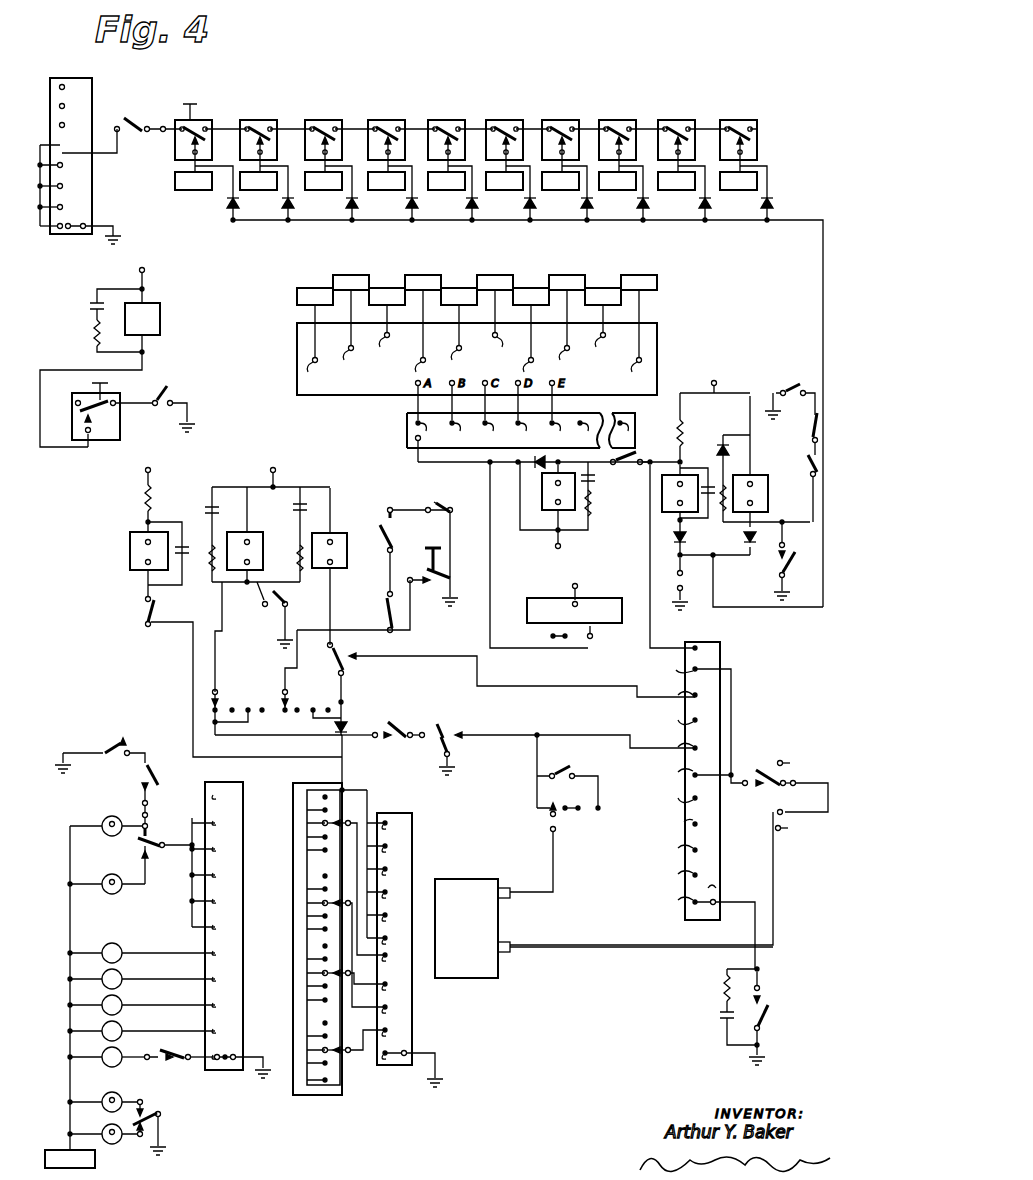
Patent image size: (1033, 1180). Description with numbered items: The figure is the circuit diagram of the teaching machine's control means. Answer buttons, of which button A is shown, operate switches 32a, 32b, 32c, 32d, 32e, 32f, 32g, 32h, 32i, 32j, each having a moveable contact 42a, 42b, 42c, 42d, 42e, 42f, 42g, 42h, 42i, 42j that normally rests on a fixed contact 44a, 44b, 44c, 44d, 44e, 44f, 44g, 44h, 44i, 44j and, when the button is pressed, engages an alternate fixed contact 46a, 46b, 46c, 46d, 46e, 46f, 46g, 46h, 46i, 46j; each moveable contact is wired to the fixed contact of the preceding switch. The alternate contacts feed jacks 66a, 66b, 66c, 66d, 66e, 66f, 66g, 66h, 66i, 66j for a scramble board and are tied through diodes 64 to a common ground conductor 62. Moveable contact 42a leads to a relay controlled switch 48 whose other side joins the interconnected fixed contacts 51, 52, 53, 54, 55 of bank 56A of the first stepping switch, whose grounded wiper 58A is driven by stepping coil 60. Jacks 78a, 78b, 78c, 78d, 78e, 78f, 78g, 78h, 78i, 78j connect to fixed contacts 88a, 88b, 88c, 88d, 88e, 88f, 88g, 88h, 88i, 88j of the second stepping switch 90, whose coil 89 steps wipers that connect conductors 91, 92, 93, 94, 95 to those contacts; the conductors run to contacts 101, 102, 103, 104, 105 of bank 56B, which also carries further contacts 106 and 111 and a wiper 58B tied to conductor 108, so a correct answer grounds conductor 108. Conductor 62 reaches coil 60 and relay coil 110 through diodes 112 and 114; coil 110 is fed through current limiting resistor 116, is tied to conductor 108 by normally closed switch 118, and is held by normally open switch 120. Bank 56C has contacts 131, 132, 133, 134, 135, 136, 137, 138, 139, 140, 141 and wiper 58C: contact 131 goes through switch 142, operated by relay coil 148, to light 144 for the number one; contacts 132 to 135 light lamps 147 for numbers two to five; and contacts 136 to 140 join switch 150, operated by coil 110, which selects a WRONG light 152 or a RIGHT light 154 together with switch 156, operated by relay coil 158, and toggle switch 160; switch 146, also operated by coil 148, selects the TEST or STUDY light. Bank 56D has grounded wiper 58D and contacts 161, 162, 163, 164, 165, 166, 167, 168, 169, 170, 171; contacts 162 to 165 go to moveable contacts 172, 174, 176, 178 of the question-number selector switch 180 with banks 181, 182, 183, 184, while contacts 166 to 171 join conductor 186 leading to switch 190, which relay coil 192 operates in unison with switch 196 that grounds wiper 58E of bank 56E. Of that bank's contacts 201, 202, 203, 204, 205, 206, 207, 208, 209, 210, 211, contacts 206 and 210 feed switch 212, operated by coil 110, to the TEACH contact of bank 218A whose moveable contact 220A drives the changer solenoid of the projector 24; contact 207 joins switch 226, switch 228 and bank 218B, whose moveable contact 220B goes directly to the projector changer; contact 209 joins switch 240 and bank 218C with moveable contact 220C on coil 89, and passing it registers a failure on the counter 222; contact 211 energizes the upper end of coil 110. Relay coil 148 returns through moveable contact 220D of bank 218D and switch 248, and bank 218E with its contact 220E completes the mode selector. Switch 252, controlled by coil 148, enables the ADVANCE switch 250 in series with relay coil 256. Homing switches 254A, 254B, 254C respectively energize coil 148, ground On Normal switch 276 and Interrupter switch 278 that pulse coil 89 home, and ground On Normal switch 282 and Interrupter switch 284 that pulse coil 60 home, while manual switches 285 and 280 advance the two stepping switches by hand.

The relay controlled switch 48 is at (130, 116).
The bank of rotary stepping switch 56A is at (80, 78).
The fixed contact 55 is at (78, 141).
The fixed contact 54 is at (52, 185).
The fixed contact 53 is at (52, 179).
The fixed contact 52 is at (52, 200).
The fixed contact 51 is at (53, 219).
The wiper 58A is at (86, 224).
The button A is at (190, 104).
The switch 32a is at (176, 116).
The switch 32b is at (258, 116).
The switch 32c is at (320, 116).
The switch 32d is at (374, 116).
The switch 32e is at (436, 116).
The switch 32f is at (492, 116).
The switch 32g is at (550, 116).
The switch 32h is at (606, 116).
The switch 32i is at (664, 116).
The switch 32j is at (726, 116).
The fixed contact 44a is at (197, 126).
The fixed contact 44b is at (257, 133).
The fixed contact 44c is at (335, 130).
The fixed contact 44d is at (390, 128).
The fixed contact 44e is at (445, 133).
The fixed contact 44f is at (503, 133).
The fixed contact 44g is at (570, 128).
The fixed contact 44h is at (616, 133).
The fixed contact 44i is at (686, 128).
The fixed contact 44j is at (748, 128).
The moveable contact 42a is at (212, 129).
The moveable contact 42b is at (272, 128).
The moveable contact 42c is at (330, 126).
The moveable contact 42d is at (398, 129).
The moveable contact 42e is at (458, 129).
The moveable contact 42f is at (508, 128).
The moveable contact 42g is at (572, 129).
The moveable contact 42h is at (630, 128).
The moveable contact 42i is at (688, 129).
The moveable contact 42j is at (760, 133).
The alternate fixed contact 46a is at (180, 150).
The alternate fixed contact 46b is at (250, 150).
The alternate fixed contact 46c is at (318, 150).
The alternate fixed contact 46d is at (388, 154).
The alternate fixed contact 46e is at (442, 152).
The alternate fixed contact 46f is at (506, 154).
The alternate fixed contact 46g is at (558, 152).
The alternate fixed contact 46h is at (619, 154).
The alternate fixed contact 46i is at (673, 152).
The alternate fixed contact 46j is at (744, 152).
The jack 66a is at (193, 181).
The jack 66b is at (258, 181).
The jack 66c is at (323, 181).
The jack 66d is at (386, 181).
The jack 66e is at (446, 181).
The jack 66f is at (504, 181).
The jack 66g is at (560, 181).
The jack 66h is at (617, 181).
The jack 66i is at (676, 181).
The jack 66j is at (738, 181).
The diodes 64 is at (788, 206).
The common ground conductor 62 is at (562, 224).
The relay coil 256 is at (160, 324).
The switch 252 is at (160, 392).
The switch 250 is at (104, 414).
The jack 78a is at (315, 296).
The jack 78b is at (351, 283).
The jack 78c is at (387, 296).
The jack 78d is at (423, 283).
The jack 78e is at (459, 296).
The jack 78f is at (495, 283).
The jack 78g is at (531, 296).
The jack 78h is at (567, 283).
The jack 78i is at (603, 296).
The jack 78j is at (639, 283).
The second rotary stepping switch 90 is at (292, 362).
The fixed contact 88a is at (315, 345).
The fixed contact 88b is at (348, 331).
The fixed contact 88c is at (375, 332).
The fixed contact 88d is at (409, 331).
The fixed contact 88e is at (451, 340).
The fixed contact 88f is at (486, 321).
The fixed contact 88g is at (519, 340).
The fixed contact 88h is at (557, 327).
The fixed contact 88i is at (597, 331).
The fixed contact 88j is at (627, 338).
The conductor 91 is at (412, 404).
The conductor 92 is at (450, 404).
The conductor 93 is at (484, 404).
The conductor 94 is at (517, 404).
The conductor 95 is at (554, 404).
The contact 101 is at (430, 432).
The contact 102 is at (461, 433).
The contact 103 is at (494, 433).
The contact 104 is at (528, 433).
The contact 105 is at (561, 433).
The terminal 106 is at (589, 433).
The terminal 111 is at (624, 434).
The bank of stepping switch 56B is at (636, 424).
The moveable contact 58B is at (415, 438).
The conductor 108 is at (456, 464).
The relay coil 158 is at (542, 492).
The normally closed switch 118 is at (618, 470).
The homing switch 254B is at (440, 498).
The On Normal switch 276 is at (396, 536).
The switch 280 is at (450, 574).
The Interrupter switch 278 is at (385, 622).
The relay coil 89 is at (336, 546).
The switch 240 is at (354, 670).
The relay coil 192 is at (130, 552).
The switch 190 is at (145, 610).
The relay coil 148 is at (251, 532).
The homing switch 254A is at (289, 615).
The moveable contact 220D is at (210, 690).
The moveable contact 220C is at (284, 688).
The mode selector bank 218D is at (214, 732).
The mode selector bank 218C is at (282, 732).
The switch 248 is at (396, 726).
The switch 226 is at (455, 752).
The switch 228 is at (566, 770).
The mode selector bank 218B is at (605, 792).
The moveable contact 220B is at (550, 826).
The projector 24 is at (472, 886).
The current limiting resistor 116 is at (683, 426).
The relay coil 110 is at (662, 498).
The diode 112 is at (712, 544).
The stepping coil 60 is at (770, 496).
The diode 114 is at (746, 540).
The normally open switch 120 is at (684, 586).
The switch 285 is at (778, 574).
The homing switch 254C is at (790, 390).
The On Normal switch 282 is at (808, 428).
The Interrupter switch 284 is at (806, 468).
The counter 222 is at (546, 598).
The mode selector contact 220E is at (593, 638).
The mode selector bank 218E is at (562, 652).
The bank of stepping switch 56E is at (724, 658).
The fixed contact 211 is at (694, 644).
The fixed contact 210 is at (700, 720).
The fixed contact 209 is at (677, 689).
The terminal 208 is at (677, 716).
The fixed contact 207 is at (677, 741).
The fixed contact 206 is at (695, 768).
The fixed contact 205 is at (677, 794).
The fixed contact 204 is at (677, 818).
The fixed contact 203 is at (677, 844).
The fixed contact 202 is at (677, 869).
The fixed contact 201 is at (684, 895).
The moveable contact 58E is at (720, 898).
The switch 212 is at (754, 770).
The mode selector bank 218A is at (784, 756).
The moveable contact 220A is at (788, 790).
The switch 196 is at (770, 1018).
The toggle switch 160 is at (100, 746).
The switch 156 is at (160, 780).
The light 154 is at (102, 822).
The switch 150 is at (152, 838).
The light 152 is at (108, 876).
The terminal 141 is at (224, 926).
The contact 140 is at (216, 824).
The contact 139 is at (215, 872).
The contact 138 is at (215, 876).
The contact 137 is at (215, 902).
The contact 136 is at (216, 928).
The contact 135 is at (181, 954).
The contact 134 is at (181, 980).
The contact 133 is at (181, 1006).
The contact 132 is at (181, 1032).
The first contact 131 is at (210, 1052).
The lights 147 is at (120, 946).
The light 144 is at (162, 1054).
The moveable contact 58C is at (235, 1064).
The switch 142 is at (176, 1064).
The bank of stepping switch 56C is at (220, 1080).
The switch 146 is at (150, 1112).
The selector switch 180 is at (312, 780).
The conductor 186 is at (350, 770).
The moveable contact 178 is at (350, 820).
The moveable contact 176 is at (344, 890).
The moveable contact 174 is at (344, 970).
The moveable contact 172 is at (348, 1056).
The contact bank 184 is at (292, 842).
The contact bank 183 is at (292, 914).
The contact bank 182 is at (292, 984).
The contact bank 181 is at (292, 1046).
The bank of stepping switch 56D is at (398, 812).
The fixed contact 171 is at (396, 830).
The fixed contact 170 is at (396, 853).
The fixed contact 169 is at (396, 876).
The fixed contact 168 is at (396, 899).
The fixed contact 167 is at (396, 922).
The fixed contact 166 is at (396, 945).
The fixed contact 165 is at (396, 964).
The fixed contact 164 is at (396, 991).
The fixed contact 163 is at (396, 1014).
The fixed contact 162 is at (395, 1026).
The fixed contact 161 is at (412, 1061).
The moveable contact 58D is at (400, 1060).